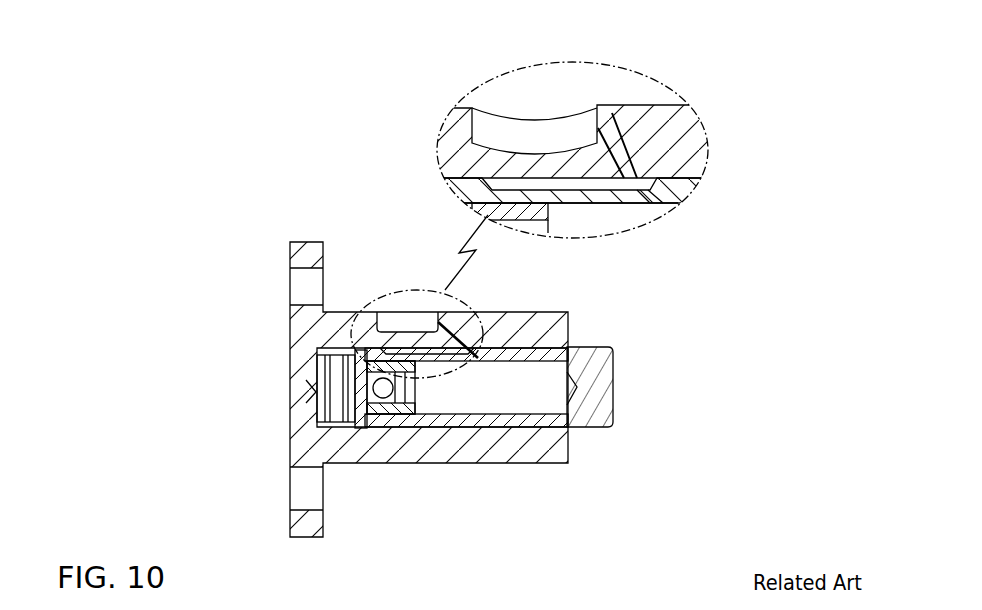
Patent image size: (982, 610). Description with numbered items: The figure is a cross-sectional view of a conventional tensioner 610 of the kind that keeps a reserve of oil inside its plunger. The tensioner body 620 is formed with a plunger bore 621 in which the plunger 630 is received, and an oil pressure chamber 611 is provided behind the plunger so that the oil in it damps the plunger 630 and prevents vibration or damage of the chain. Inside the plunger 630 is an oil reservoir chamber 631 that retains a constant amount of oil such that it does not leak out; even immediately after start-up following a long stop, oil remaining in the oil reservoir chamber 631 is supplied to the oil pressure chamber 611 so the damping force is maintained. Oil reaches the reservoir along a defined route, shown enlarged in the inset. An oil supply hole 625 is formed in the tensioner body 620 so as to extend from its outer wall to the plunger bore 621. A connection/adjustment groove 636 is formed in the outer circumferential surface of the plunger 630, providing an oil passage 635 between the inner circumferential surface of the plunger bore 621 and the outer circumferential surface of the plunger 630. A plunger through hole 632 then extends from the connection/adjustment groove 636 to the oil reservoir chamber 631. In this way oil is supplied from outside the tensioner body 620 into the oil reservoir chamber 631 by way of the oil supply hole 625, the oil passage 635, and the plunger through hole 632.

The tensioner 610 is at (232, 94).
The oil pressure chamber 611 is at (310, 384).
The tensioner body 620 is at (545, 325).
The plunger bore 621 is at (510, 348).
The oil supply hole 625 is at (612, 150).
The plunger 630 is at (603, 394).
The oil reservoir chamber 631 is at (508, 393).
The plunger through hole 632 is at (657, 200).
The oil passage 635 is at (563, 182).
The connection/adjustment groove 636 is at (597, 207).